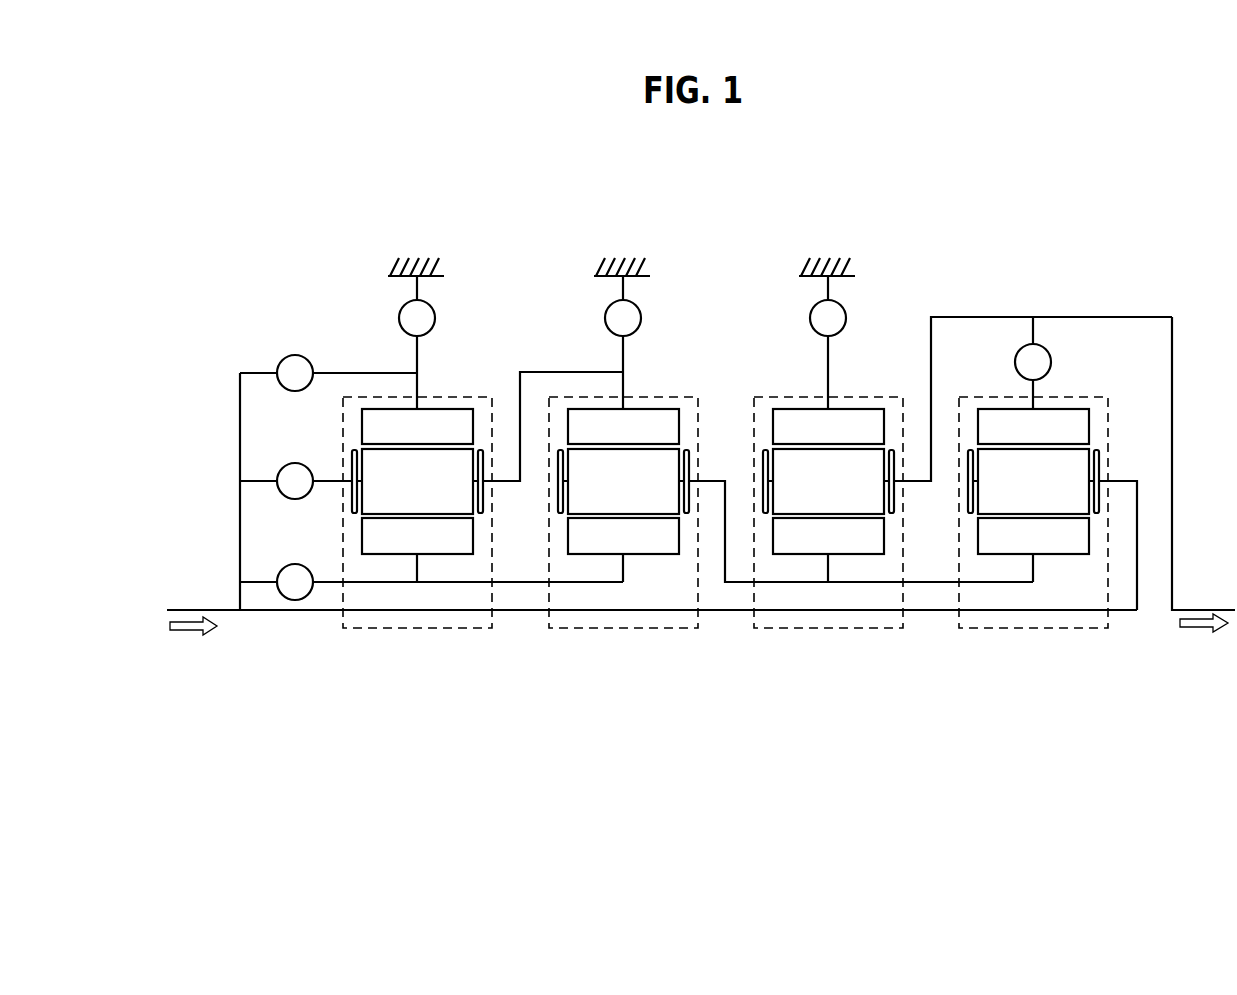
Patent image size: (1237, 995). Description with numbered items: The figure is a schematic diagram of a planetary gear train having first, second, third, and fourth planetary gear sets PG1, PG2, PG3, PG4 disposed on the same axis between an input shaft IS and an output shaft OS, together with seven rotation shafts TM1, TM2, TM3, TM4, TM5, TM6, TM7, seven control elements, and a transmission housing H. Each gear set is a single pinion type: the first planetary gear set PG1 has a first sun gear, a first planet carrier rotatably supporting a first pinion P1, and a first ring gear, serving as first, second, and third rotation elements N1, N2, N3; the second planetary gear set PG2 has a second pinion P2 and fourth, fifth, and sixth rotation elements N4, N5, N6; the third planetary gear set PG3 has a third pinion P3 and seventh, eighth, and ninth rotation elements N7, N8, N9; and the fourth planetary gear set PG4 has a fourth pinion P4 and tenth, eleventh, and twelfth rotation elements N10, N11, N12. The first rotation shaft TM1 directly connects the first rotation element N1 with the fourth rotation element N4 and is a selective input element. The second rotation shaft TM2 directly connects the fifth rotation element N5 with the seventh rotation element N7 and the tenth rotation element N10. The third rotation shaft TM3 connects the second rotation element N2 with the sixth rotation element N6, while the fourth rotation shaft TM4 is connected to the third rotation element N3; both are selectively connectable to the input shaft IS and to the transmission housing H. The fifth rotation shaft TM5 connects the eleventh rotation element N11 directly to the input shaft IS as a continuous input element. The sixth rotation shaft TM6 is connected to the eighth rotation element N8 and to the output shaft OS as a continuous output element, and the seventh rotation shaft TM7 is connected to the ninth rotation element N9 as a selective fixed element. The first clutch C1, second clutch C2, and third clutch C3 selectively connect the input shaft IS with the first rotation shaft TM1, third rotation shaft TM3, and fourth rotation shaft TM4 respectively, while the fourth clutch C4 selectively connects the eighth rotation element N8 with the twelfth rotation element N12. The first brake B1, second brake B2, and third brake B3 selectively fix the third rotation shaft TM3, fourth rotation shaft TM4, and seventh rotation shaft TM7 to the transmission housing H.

The first planetary gear set PG1 is at (415, 632).
The second planetary gear set PG2 is at (621, 632).
The third planetary gear set PG3 is at (826, 632).
The fourth planetary gear set PG4 is at (1031, 632).
The first rotation element N1 is at (417, 536).
The second rotation element N2 is at (351, 506).
The third rotation element N3 is at (417, 426).
The fourth rotation element N4 is at (623, 536).
The fifth rotation element N5 is at (557, 507).
The sixth rotation element N6 is at (623, 426).
The seventh rotation element N7 is at (828, 536).
The eighth rotation element N8 is at (895, 506).
The ninth rotation element N9 is at (828, 426).
The tenth rotation element N10 is at (1033, 536).
The eleventh rotation element N11 is at (1100, 450).
The twelfth rotation element N12 is at (1033, 426).
The first pinion P1 is at (417, 481).
The second pinion P2 is at (623, 481).
The third pinion P3 is at (828, 481).
The fourth pinion P4 is at (1033, 481).
The first rotation shaft TM1 is at (522, 586).
The second rotation shaft TM2 is at (935, 586).
The third rotation shaft TM3 is at (541, 369).
The fourth rotation shaft TM4 is at (369, 369).
The fifth rotation shaft TM5 is at (1139, 479).
The sixth rotation shaft TM6 is at (1039, 391).
The seventh rotation shaft TM7 is at (832, 370).
The first clutch C1 is at (276, 582).
The second clutch C2 is at (296, 481).
The third clutch C3 is at (276, 373).
The fourth clutch C4 is at (1033, 363).
The first brake B1 is at (623, 324).
The second brake B2 is at (417, 342).
The third brake B3 is at (828, 306).
The transmission housing H is at (418, 272).
The input shaft IS is at (191, 608).
The output shaft OS is at (1201, 607).